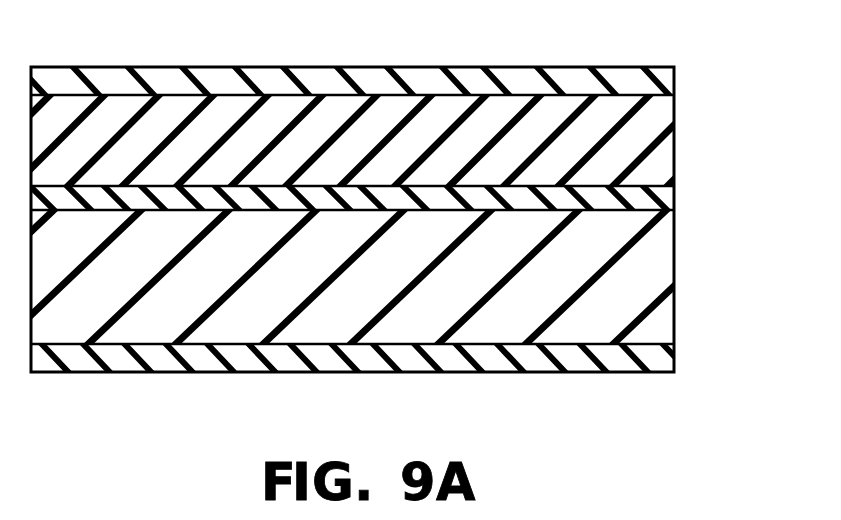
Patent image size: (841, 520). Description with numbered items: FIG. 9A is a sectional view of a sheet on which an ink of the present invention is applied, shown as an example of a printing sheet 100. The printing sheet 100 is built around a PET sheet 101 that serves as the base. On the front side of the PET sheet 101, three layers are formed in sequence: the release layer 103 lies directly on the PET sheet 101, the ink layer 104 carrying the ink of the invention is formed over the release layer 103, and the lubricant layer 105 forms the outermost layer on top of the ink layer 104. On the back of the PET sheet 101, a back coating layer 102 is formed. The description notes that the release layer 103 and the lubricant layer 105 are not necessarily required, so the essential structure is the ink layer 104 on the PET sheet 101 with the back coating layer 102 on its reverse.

The printing sheet 100 is at (561, 56).
The PET sheet 101 is at (665, 303).
The back coating layer 102 is at (615, 362).
The release layer 103 is at (667, 200).
The ink layer 104 is at (665, 154).
The lubricant layer 105 is at (667, 82).